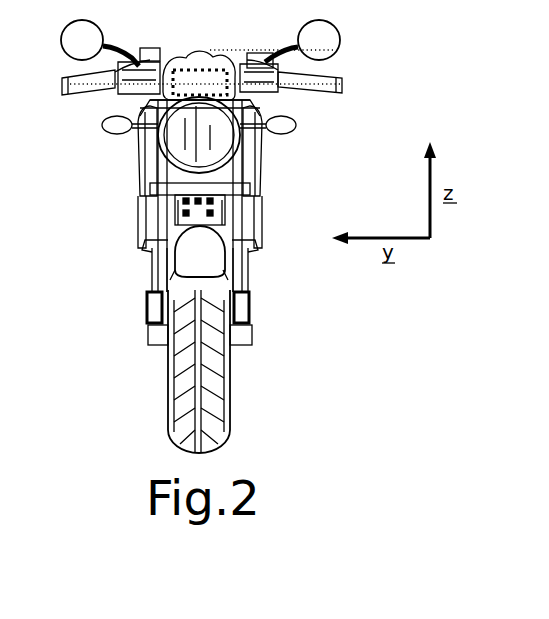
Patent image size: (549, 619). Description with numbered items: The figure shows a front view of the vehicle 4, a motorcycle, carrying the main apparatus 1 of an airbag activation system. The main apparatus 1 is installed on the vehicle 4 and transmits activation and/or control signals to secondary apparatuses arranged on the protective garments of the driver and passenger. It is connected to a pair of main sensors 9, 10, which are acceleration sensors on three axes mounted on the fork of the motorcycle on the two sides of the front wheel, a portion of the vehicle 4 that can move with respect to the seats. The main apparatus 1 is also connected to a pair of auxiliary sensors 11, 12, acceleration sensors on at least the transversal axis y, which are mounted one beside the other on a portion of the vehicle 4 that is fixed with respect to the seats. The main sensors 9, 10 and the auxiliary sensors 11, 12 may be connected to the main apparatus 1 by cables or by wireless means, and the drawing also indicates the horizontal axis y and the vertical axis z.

The main apparatus 1 is at (204, 84).
The vehicle 4 is at (257, 229).
The main sensor 9 is at (147, 303).
The main sensor 10 is at (249, 303).
The auxiliary sensor 11 is at (156, 190).
The auxiliary sensor 12 is at (244, 190).